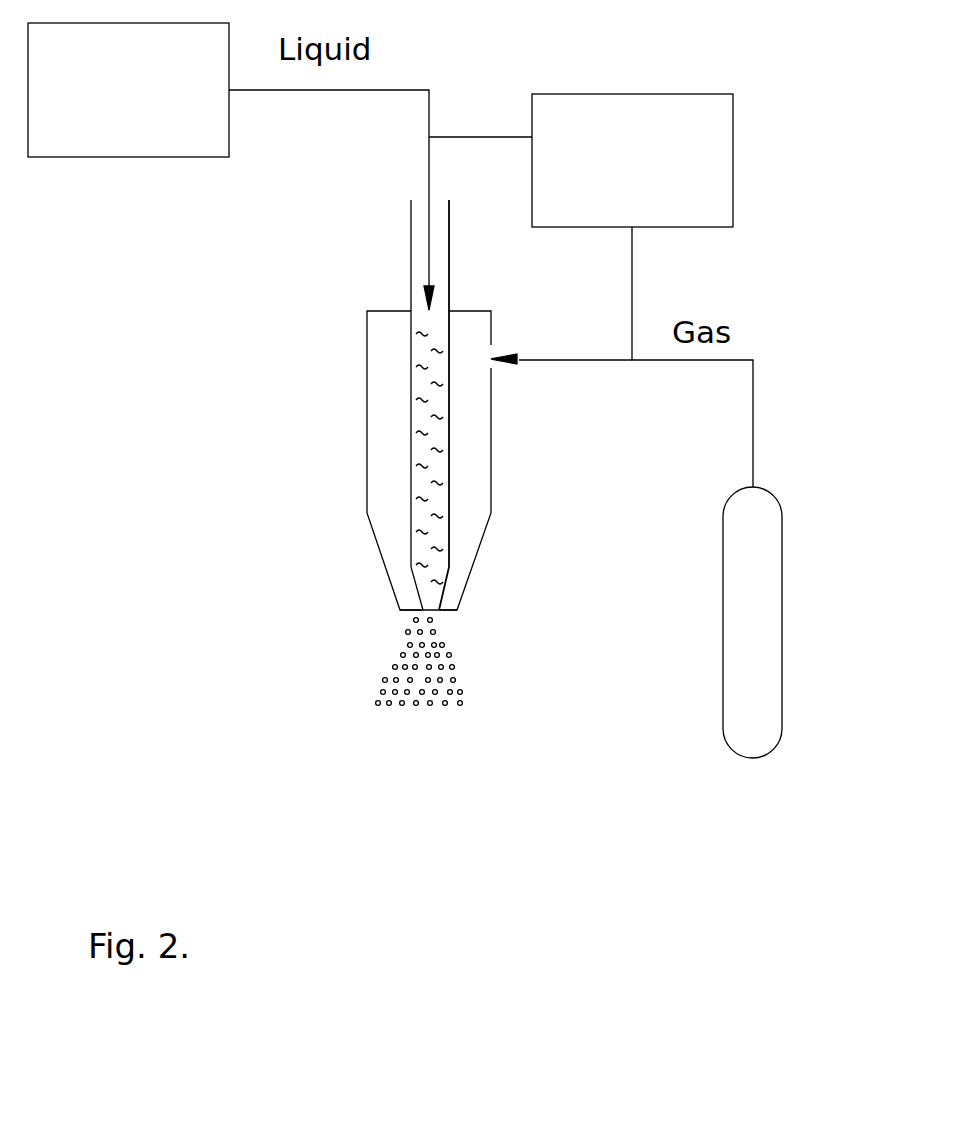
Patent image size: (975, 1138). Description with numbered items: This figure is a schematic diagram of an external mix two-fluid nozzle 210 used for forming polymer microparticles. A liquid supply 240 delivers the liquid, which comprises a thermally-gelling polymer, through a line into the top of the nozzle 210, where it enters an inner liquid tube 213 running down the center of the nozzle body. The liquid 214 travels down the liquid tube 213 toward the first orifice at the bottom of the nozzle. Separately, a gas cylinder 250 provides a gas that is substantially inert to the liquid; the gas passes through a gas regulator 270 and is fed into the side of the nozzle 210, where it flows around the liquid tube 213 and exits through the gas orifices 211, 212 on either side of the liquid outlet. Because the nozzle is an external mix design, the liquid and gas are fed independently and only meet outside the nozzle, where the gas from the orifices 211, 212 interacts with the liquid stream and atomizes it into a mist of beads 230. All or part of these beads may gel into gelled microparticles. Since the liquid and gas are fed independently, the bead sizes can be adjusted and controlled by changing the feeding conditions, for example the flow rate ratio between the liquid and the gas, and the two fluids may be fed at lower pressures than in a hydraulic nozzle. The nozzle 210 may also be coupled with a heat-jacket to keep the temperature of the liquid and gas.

The external mix two-fluid nozzle 210 is at (367, 368).
The gas orifice 211 is at (446, 620).
The gas orifice 212 is at (395, 620).
The liquid tube 213 is at (412, 418).
The liquid 214 is at (398, 485).
The mist of beads 230 is at (462, 688).
The liquid supply 240 is at (125, 157).
The gas cylinder 250 is at (782, 565).
The gas regulator 270 is at (733, 117).